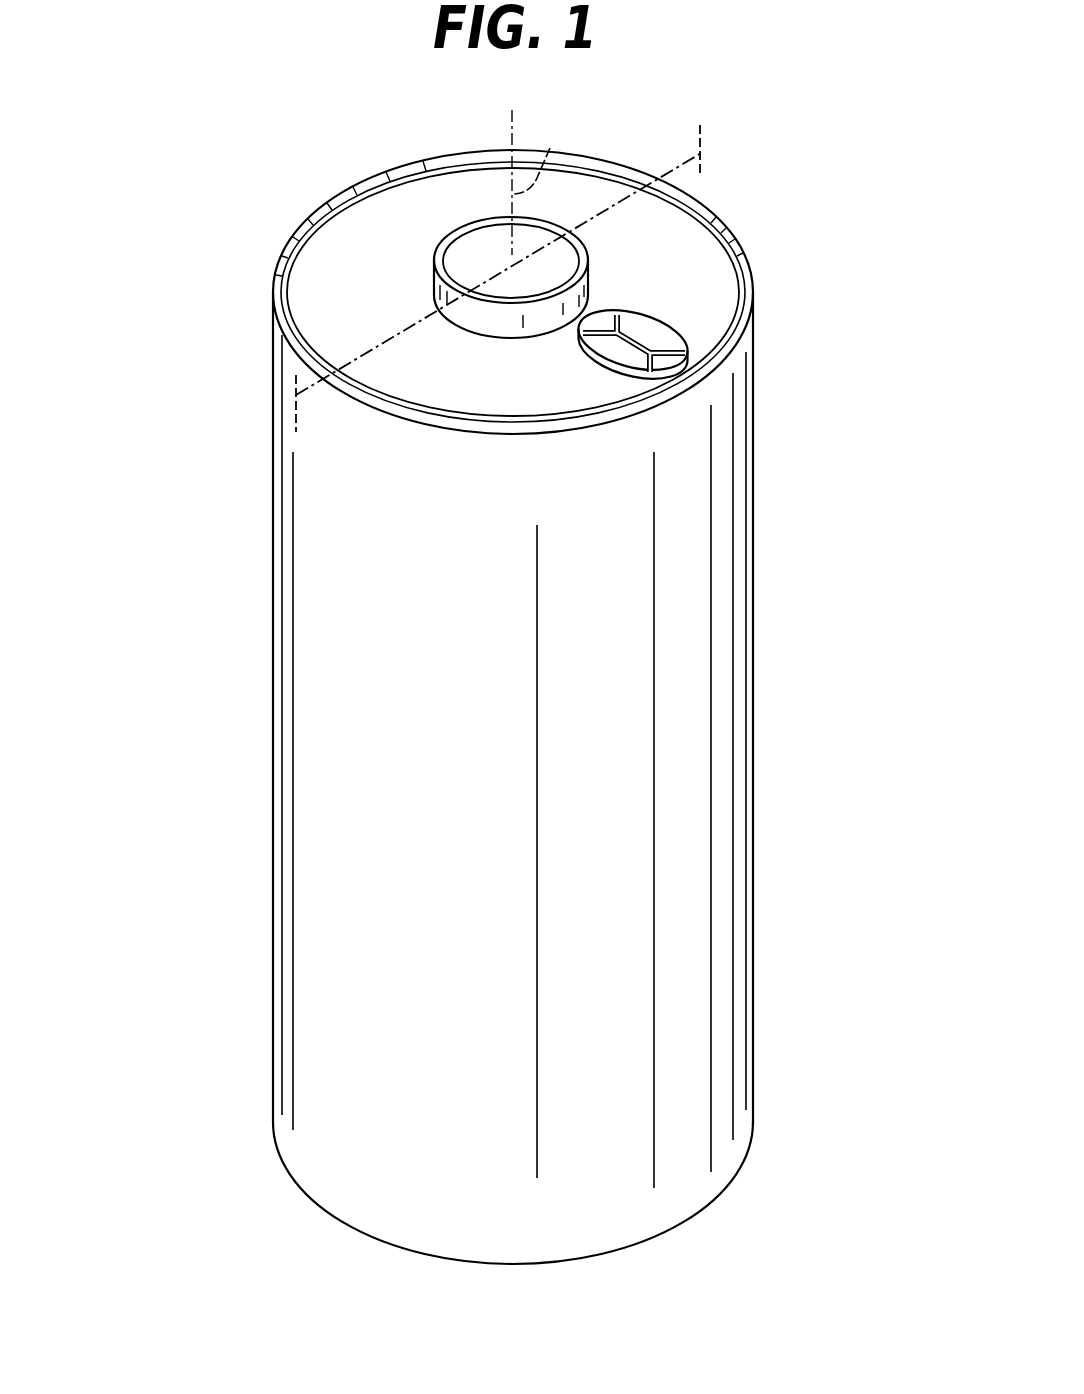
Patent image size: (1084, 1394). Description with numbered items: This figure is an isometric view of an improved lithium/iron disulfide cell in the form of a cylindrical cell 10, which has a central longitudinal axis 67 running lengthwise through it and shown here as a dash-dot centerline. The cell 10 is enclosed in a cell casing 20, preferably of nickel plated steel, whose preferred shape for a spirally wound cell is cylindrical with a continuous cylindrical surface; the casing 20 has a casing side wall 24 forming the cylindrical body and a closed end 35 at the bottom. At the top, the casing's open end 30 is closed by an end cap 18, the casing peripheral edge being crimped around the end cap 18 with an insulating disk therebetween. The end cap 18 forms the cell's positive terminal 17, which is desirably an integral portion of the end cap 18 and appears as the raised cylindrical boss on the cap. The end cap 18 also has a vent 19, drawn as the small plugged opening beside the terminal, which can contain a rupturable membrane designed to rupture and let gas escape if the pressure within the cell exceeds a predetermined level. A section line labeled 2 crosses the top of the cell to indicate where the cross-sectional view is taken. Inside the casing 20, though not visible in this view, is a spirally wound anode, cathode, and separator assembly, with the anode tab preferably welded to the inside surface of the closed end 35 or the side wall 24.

The cylindrical cell 10 is at (221, 609).
The positive terminal 17 is at (473, 218).
The central longitudinal axis 67 is at (546, 182).
The section line 2- 2 is at (296, 400).
The open end 30 is at (665, 230).
The end cap 18 is at (720, 290).
The vent 19 is at (683, 336).
The casing side wall 24 is at (755, 527).
The cell casing 20 is at (756, 587).
The closed end 35 is at (449, 1262).